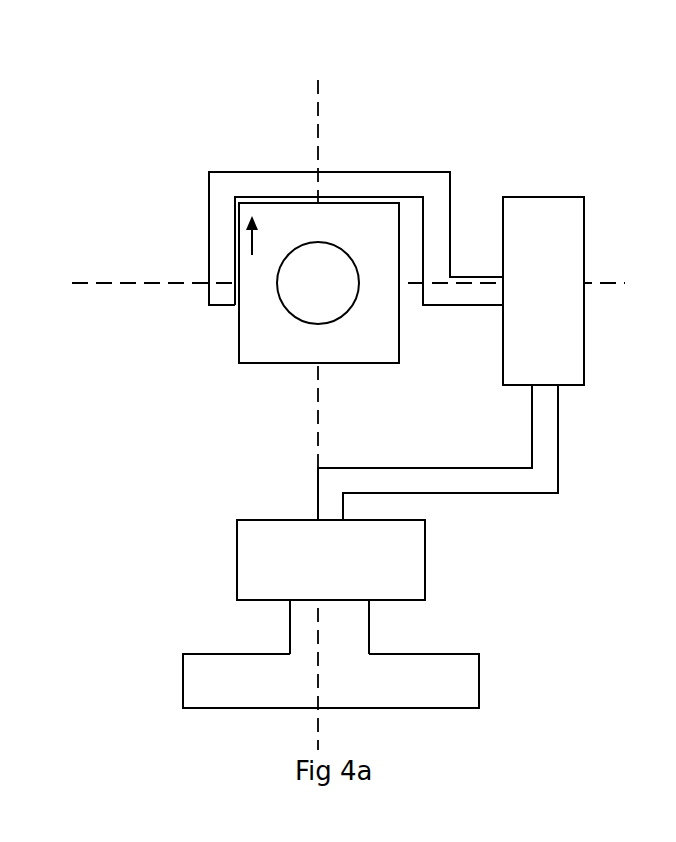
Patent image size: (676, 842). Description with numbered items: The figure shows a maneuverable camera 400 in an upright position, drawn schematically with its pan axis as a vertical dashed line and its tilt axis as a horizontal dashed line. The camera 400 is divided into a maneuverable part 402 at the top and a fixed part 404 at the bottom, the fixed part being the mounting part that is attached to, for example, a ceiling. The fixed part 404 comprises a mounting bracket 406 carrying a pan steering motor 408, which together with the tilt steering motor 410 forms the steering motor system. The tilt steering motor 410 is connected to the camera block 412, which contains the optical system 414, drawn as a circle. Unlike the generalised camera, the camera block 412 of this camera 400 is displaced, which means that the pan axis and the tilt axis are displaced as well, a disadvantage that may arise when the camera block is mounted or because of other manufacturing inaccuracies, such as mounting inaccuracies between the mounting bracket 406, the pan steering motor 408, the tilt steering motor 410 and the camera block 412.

The camera 400 is at (374, 141).
The maneuverable part 402 is at (158, 172).
The fixed part 404 is at (158, 523).
The mounting bracket 406 is at (247, 697).
The pan steering motor 408 is at (306, 573).
The tilt steering motor 410 is at (566, 358).
The camera block 412 is at (301, 357).
The optical system 414 is at (340, 299).